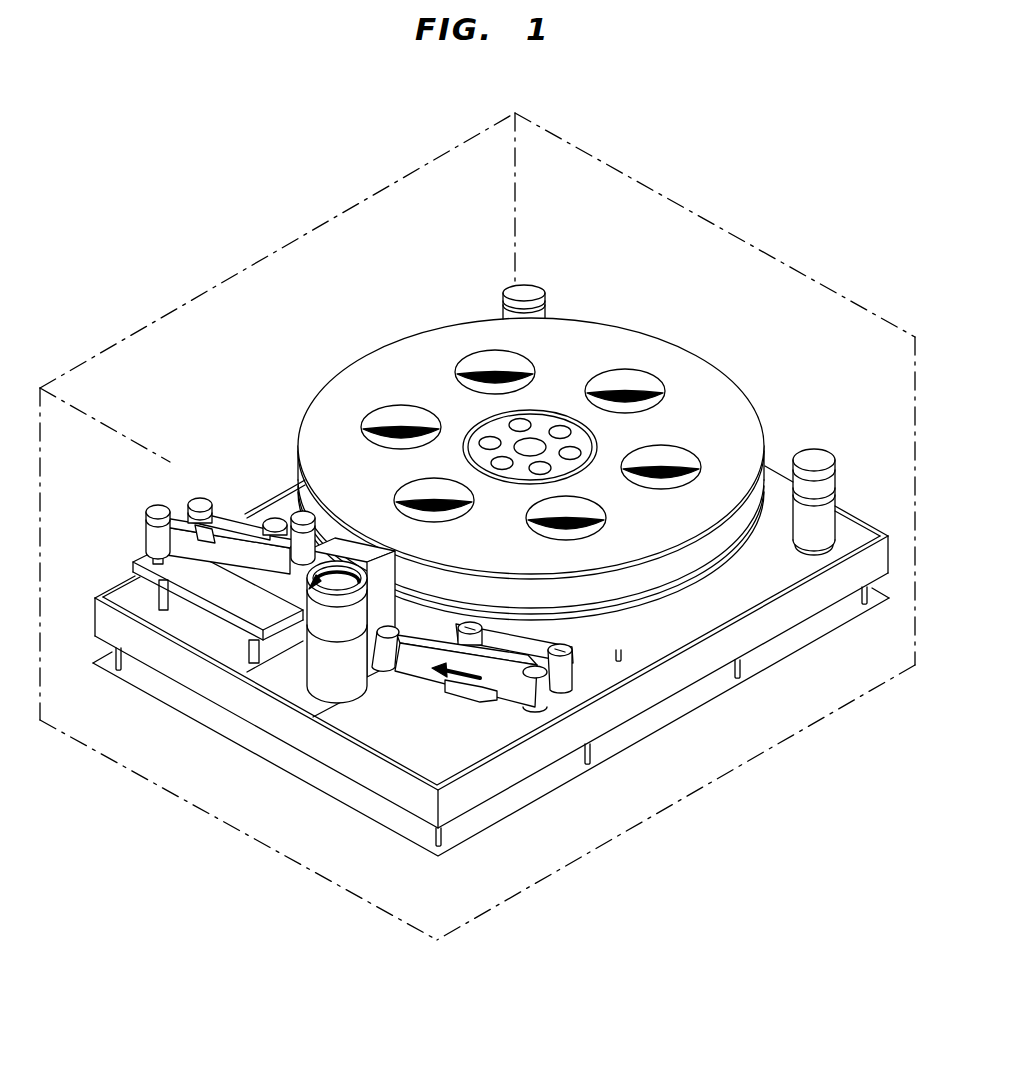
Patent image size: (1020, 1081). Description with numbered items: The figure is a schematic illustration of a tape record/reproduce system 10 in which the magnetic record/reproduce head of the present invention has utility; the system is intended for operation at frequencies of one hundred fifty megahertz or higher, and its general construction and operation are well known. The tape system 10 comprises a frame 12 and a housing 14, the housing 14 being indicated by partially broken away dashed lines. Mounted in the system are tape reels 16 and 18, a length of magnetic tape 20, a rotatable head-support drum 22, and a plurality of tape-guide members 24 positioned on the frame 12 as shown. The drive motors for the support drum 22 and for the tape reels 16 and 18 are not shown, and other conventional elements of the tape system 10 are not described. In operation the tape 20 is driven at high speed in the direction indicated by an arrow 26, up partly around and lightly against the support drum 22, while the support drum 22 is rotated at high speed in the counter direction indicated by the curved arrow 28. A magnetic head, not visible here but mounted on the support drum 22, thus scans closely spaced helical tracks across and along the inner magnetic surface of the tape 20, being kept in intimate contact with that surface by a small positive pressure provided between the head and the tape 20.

The tape record/reproduce system 10 is at (236, 150).
The frame 12 is at (657, 688).
The housing 14 is at (200, 293).
The tape reel 16 is at (693, 557).
The tape reel 18 is at (757, 553).
The magnetic tape 20 is at (343, 655).
The rotatable head-support drum 22 is at (312, 672).
The tape-guide members 24 is at (303, 512).
The arrow 26 is at (463, 670).
The curved arrow 28 is at (307, 574).